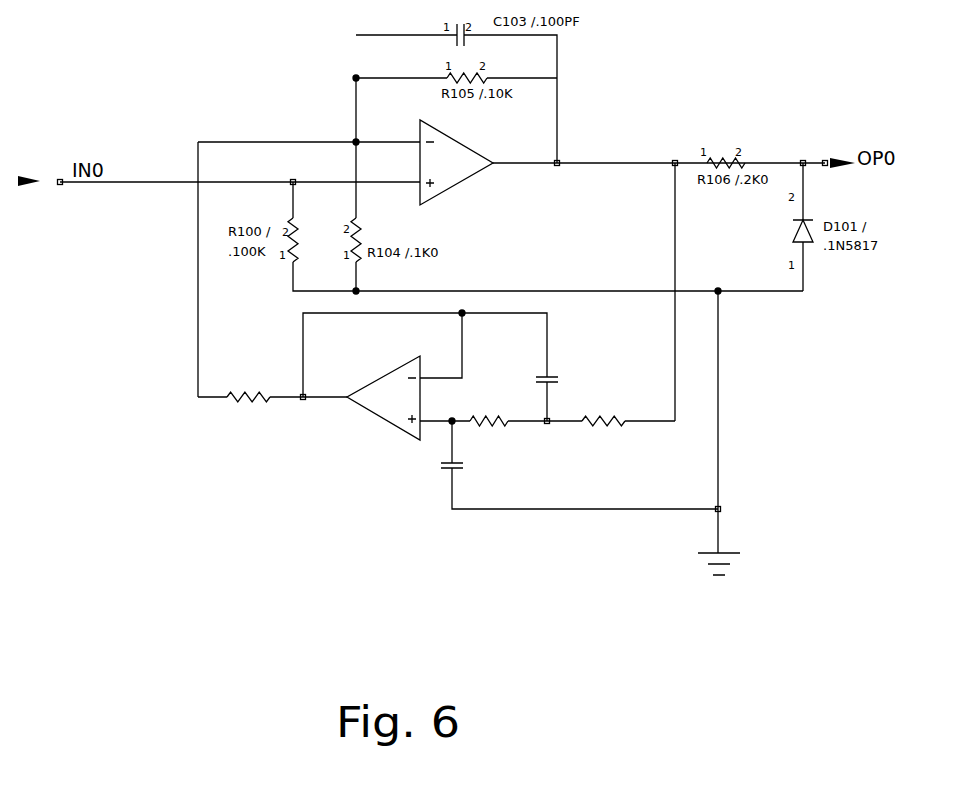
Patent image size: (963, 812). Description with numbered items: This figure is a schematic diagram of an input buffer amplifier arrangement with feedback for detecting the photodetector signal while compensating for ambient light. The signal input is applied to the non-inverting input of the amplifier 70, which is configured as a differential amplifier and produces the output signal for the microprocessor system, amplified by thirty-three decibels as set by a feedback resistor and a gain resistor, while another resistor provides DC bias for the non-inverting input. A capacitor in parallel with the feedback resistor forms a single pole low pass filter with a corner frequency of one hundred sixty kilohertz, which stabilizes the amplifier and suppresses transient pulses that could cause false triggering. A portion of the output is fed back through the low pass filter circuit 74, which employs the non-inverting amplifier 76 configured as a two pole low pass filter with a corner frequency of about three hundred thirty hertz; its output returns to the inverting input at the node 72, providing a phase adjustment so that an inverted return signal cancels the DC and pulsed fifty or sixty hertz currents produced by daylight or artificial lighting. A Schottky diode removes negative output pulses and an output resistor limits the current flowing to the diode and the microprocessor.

The amplifier 70 is at (447, 158).
The node 72 is at (343, 128).
The low pass filter circuit 74 is at (338, 468).
The non-inverting amplifier 76 is at (384, 398).